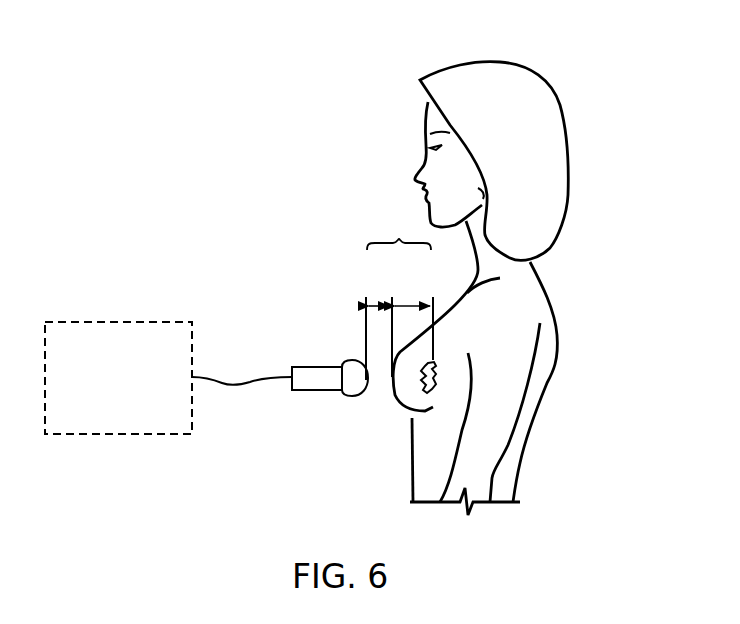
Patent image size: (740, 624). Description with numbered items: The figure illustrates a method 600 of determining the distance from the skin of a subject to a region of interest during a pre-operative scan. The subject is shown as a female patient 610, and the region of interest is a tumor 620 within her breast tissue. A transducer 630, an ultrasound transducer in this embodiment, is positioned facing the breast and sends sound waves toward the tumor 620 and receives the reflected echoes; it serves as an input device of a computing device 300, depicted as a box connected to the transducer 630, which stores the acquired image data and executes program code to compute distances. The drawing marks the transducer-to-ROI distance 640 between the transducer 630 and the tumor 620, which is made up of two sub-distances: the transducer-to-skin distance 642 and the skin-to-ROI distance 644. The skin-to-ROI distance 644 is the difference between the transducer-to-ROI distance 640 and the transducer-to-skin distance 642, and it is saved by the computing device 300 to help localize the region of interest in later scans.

The method 600 is at (197, 105).
The female patient 610 is at (545, 58).
The tumor 620 is at (438, 377).
The transducer 630 is at (318, 402).
The transducer-to-ROI distance 640 is at (399, 231).
The transducer-to-skin distance 642 is at (380, 297).
The skin-to-ROI distance 644 is at (412, 300).
The computing device 300 is at (120, 445).